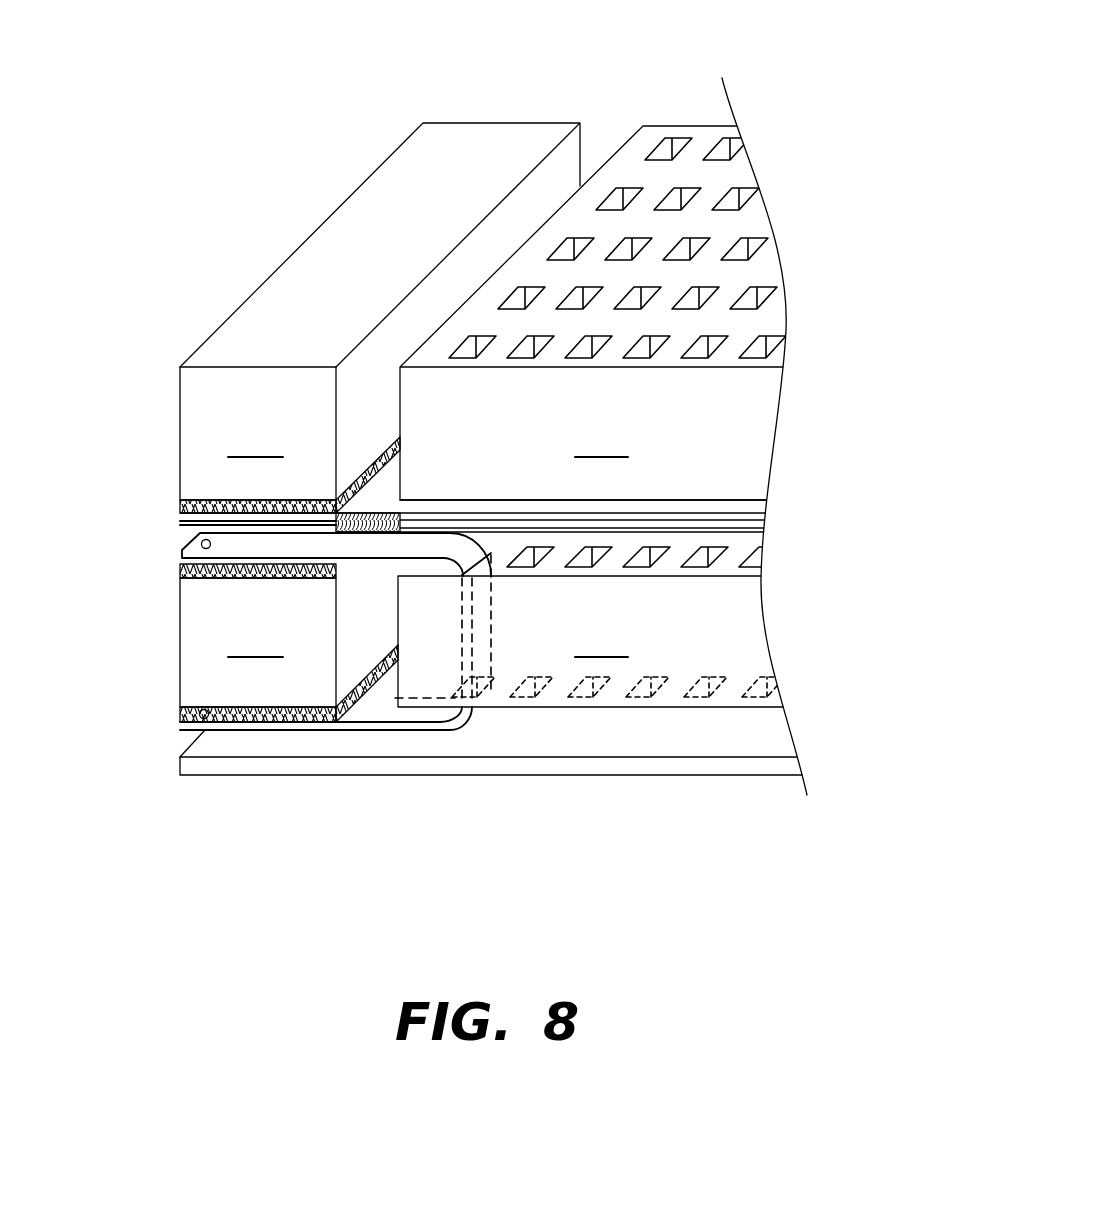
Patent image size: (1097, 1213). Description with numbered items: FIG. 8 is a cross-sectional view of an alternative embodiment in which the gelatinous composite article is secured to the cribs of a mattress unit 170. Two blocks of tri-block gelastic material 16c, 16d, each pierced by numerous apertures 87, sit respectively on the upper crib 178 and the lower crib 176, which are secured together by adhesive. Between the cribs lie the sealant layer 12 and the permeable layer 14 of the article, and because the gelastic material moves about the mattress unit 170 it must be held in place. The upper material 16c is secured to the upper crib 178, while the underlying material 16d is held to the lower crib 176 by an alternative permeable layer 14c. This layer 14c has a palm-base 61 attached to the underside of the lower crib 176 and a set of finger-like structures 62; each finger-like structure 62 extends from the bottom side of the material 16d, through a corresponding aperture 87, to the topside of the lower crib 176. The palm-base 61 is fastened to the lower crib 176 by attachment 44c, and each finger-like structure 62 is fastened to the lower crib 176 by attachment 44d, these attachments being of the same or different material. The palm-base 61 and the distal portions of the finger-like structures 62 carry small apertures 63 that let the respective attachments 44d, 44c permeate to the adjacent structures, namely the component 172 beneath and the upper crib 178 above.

The mattress unit 170 is at (236, 158).
The apertures 87 is at (672, 148).
The upper crib 178 is at (380, 311).
The gelastic material 16c is at (600, 313).
The permeable layer 14 is at (182, 511).
The sealant layer 12 is at (182, 527).
The apertures 63 is at (201, 543).
The finger-like structures 62 is at (385, 547).
The attachment 44d is at (182, 569).
The lower crib 176 is at (258, 642).
The attachment 44c is at (182, 714).
The gelastic material 16d is at (599, 627).
The alternative permeable layer 14c is at (413, 712).
The palm-base 61 is at (268, 731).
The mattress unit component 172 is at (790, 768).